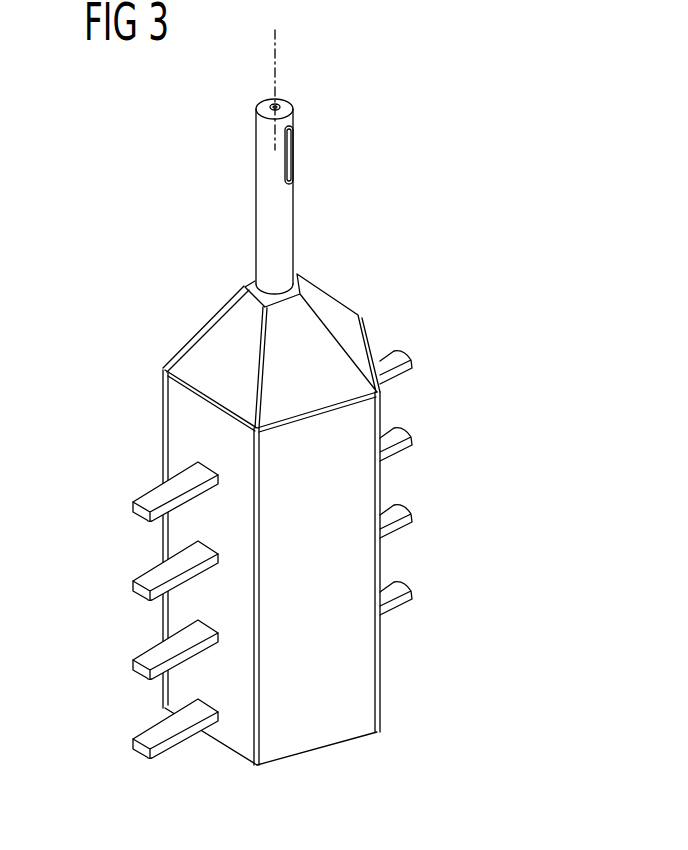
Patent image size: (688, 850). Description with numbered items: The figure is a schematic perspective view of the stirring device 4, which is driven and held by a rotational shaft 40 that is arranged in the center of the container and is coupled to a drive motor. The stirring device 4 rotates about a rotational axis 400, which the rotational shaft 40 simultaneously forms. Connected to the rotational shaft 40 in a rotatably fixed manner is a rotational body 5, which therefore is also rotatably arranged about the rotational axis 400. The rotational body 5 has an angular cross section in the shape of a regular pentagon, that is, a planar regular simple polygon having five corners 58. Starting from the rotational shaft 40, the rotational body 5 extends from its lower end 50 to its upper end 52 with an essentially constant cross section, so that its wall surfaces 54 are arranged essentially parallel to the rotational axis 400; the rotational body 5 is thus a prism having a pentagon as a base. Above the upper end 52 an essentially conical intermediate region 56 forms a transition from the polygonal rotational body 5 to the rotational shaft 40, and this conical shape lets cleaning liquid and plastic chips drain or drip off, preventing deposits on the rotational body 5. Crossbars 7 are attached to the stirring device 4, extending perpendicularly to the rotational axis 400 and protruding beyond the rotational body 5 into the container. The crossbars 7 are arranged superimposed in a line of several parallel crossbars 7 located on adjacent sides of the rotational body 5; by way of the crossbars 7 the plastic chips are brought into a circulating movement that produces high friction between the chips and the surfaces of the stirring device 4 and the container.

The stirring device 4 is at (357, 259).
The rotational shaft 40 is at (277, 106).
The rotational axis 400 is at (272, 44).
The rotational body 5 is at (365, 490).
The crossbars 7 is at (143, 660).
The lower end 50 is at (220, 748).
The upper end 52 is at (163, 372).
The wall surfaces 54 is at (338, 740).
The intermediate region 56 is at (213, 332).
The corners 58 is at (255, 567).